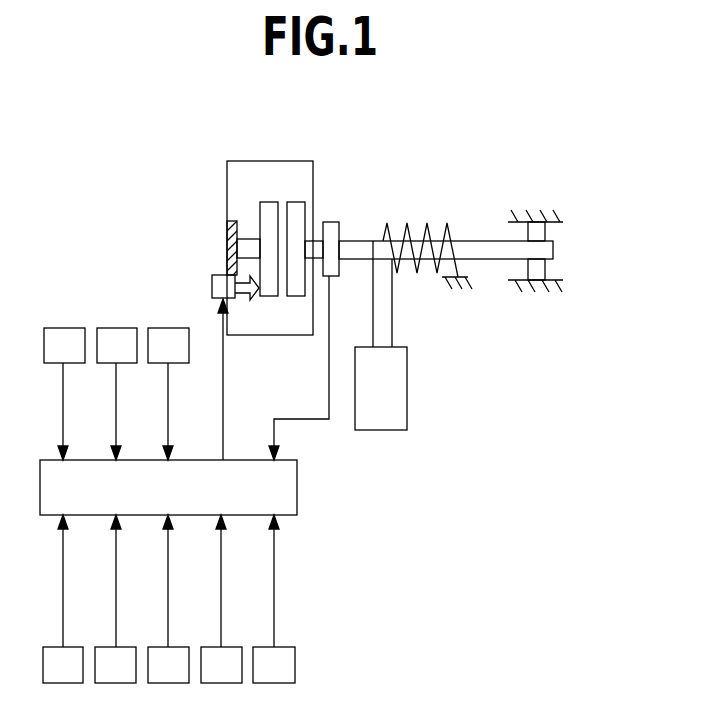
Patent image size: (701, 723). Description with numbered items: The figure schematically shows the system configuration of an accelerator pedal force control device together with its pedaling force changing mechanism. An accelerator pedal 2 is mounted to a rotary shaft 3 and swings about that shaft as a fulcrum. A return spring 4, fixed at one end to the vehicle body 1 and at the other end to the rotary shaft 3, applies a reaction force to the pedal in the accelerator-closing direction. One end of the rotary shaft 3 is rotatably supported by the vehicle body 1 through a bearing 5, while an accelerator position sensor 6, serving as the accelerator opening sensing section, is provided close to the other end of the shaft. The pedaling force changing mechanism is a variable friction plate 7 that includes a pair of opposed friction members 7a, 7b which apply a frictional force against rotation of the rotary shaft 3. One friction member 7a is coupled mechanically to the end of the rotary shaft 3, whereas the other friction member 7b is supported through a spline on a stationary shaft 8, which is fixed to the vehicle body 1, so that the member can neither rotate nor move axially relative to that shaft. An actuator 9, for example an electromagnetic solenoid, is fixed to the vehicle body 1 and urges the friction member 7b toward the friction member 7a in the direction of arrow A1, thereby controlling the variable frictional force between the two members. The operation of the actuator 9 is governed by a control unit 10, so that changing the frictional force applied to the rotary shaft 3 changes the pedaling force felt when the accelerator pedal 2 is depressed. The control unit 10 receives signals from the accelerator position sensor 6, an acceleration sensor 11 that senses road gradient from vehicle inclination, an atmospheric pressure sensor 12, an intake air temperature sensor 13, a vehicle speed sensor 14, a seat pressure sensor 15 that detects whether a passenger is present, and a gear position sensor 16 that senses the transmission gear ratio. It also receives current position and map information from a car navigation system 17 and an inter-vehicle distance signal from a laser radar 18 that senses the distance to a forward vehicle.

The vehicle body 1 is at (225, 236).
The accelerator pedal 2 is at (398, 334).
The rotary shaft 3 is at (478, 245).
The return spring 4 is at (410, 235).
The bearing 5 is at (545, 270).
The accelerator position sensor 6 is at (332, 224).
The variable friction plate 7 is at (289, 336).
The friction member 7a is at (297, 202).
The friction member 7b is at (268, 202).
The stationary shaft 8 is at (248, 240).
The actuator 9 is at (213, 285).
The arrow A1 is at (240, 300).
The control unit 10 is at (297, 487).
The acceleration sensor 11 is at (63, 599).
The atmospheric pressure sensor 12 is at (115, 599).
The intake air temperature sensor 13 is at (168, 599).
The vehicle speed sensor 14 is at (221, 599).
The seat pressure sensor 15 is at (274, 599).
The gear position sensor 16 is at (64, 394).
The car navigation system 17 is at (117, 394).
The laser radar 18 is at (168, 394).